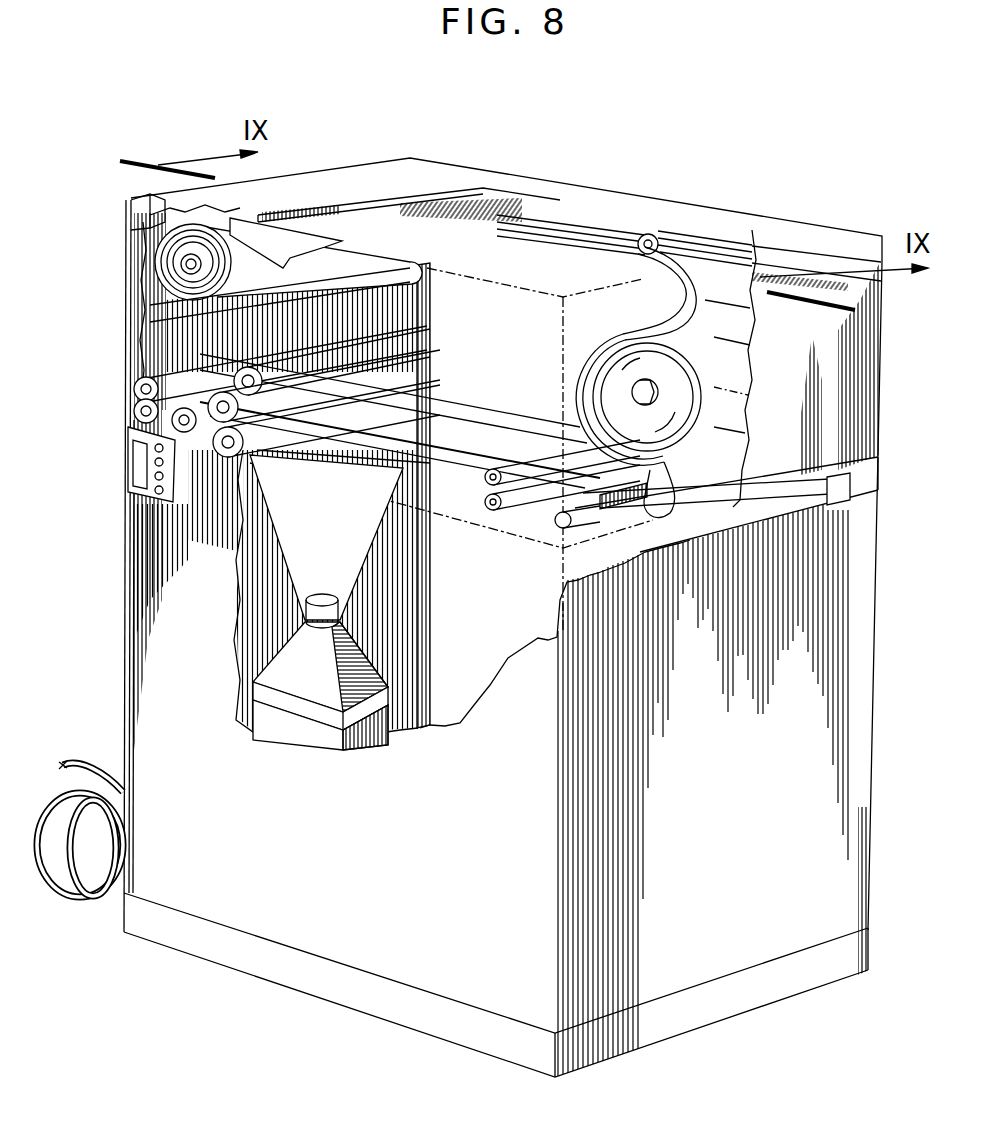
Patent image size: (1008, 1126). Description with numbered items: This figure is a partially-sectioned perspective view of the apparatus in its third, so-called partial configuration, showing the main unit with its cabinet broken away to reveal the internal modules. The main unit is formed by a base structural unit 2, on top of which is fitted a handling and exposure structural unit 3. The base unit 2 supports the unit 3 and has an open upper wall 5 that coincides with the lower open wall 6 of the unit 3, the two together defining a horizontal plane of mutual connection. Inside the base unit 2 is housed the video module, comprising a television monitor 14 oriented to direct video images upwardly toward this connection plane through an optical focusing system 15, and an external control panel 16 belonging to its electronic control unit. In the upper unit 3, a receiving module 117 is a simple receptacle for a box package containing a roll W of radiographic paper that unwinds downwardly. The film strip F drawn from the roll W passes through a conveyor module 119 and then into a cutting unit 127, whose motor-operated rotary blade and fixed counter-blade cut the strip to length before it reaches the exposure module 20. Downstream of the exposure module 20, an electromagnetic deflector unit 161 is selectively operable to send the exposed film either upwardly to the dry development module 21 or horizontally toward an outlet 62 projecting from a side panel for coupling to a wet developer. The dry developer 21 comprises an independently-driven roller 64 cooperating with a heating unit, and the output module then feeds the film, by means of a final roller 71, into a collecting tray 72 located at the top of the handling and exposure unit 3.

The base structural unit 2 is at (116, 602).
The handling and exposure structural unit 3 is at (887, 366).
The open upper wall 5 is at (478, 532).
The lower open wall 6 is at (420, 495).
The television monitor 14 is at (365, 650).
The optical focusing system 15 is at (320, 602).
The external control panel 16 is at (140, 468).
The exposure module 20 is at (448, 490).
The dry development module 21 is at (688, 464).
The outlet 62 is at (805, 492).
The roller 64 is at (620, 400).
The final roller 71 is at (693, 226).
The collecting tray 72 is at (590, 230).
The receiving module 117 is at (117, 264).
The conveyor module 119 is at (126, 409).
The cutting unit 127 is at (203, 452).
The electromagnetic deflector unit 161 is at (577, 527).
The roll of radiographic paper W is at (134, 205).
The film strip F is at (158, 340).